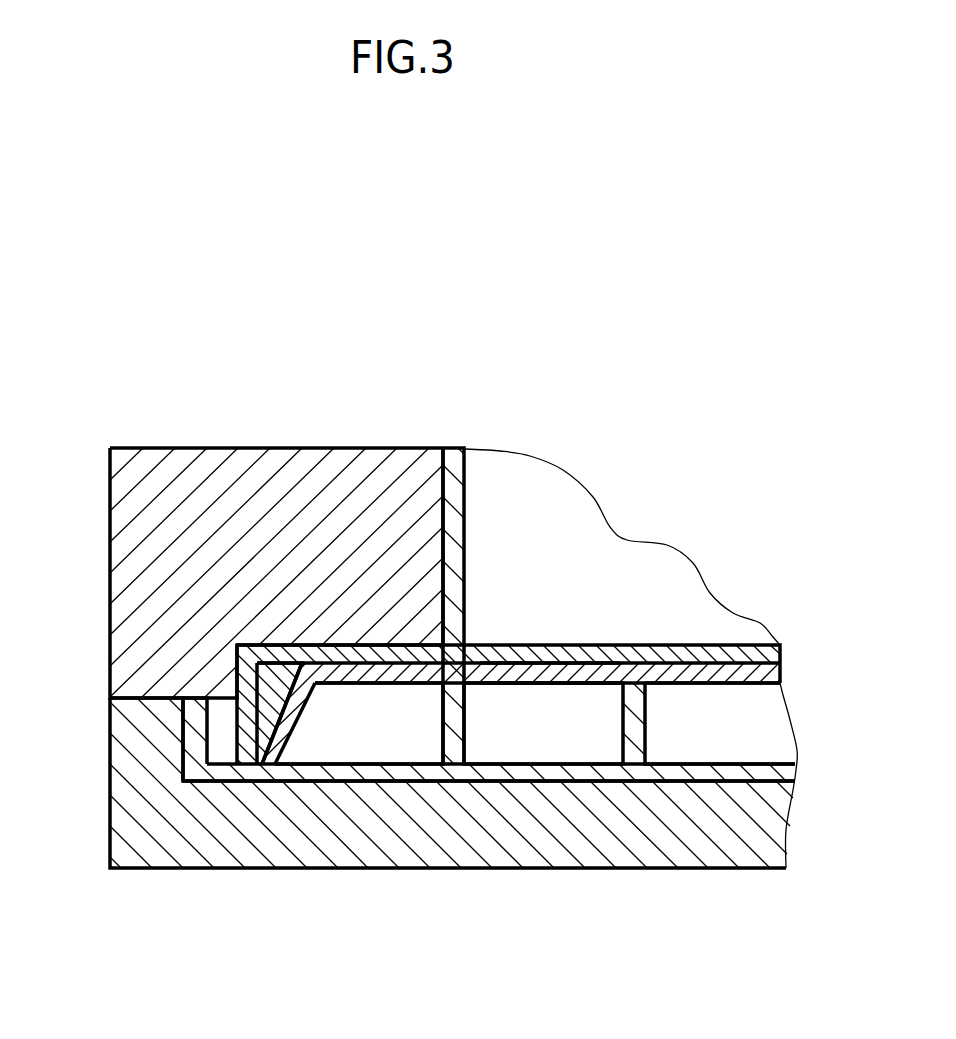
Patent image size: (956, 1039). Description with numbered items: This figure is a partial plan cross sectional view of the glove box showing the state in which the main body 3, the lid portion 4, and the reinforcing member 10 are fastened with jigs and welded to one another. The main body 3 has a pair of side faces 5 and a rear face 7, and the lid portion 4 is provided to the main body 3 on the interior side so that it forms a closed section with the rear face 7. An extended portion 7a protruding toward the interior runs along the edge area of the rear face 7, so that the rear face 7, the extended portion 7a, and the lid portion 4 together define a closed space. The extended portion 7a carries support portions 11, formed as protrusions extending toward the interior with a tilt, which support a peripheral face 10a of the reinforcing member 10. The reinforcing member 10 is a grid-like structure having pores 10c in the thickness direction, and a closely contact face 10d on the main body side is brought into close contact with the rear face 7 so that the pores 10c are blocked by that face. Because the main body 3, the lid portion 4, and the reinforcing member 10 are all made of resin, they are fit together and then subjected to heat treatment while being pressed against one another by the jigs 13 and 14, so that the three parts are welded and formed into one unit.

The main body 3 is at (467, 513).
The lid portion 4 is at (585, 778).
The side face 5 is at (455, 525).
The rear face 7 is at (639, 653).
The extended portion 7a is at (243, 685).
The reinforcing member 10 is at (740, 685).
The peripheral face 10a is at (183, 743).
The pore 10c is at (497, 740).
The closely contact face 10d is at (545, 672).
The support portion 11 is at (257, 710).
The jig 13 is at (220, 457).
The jig 14 is at (235, 843).